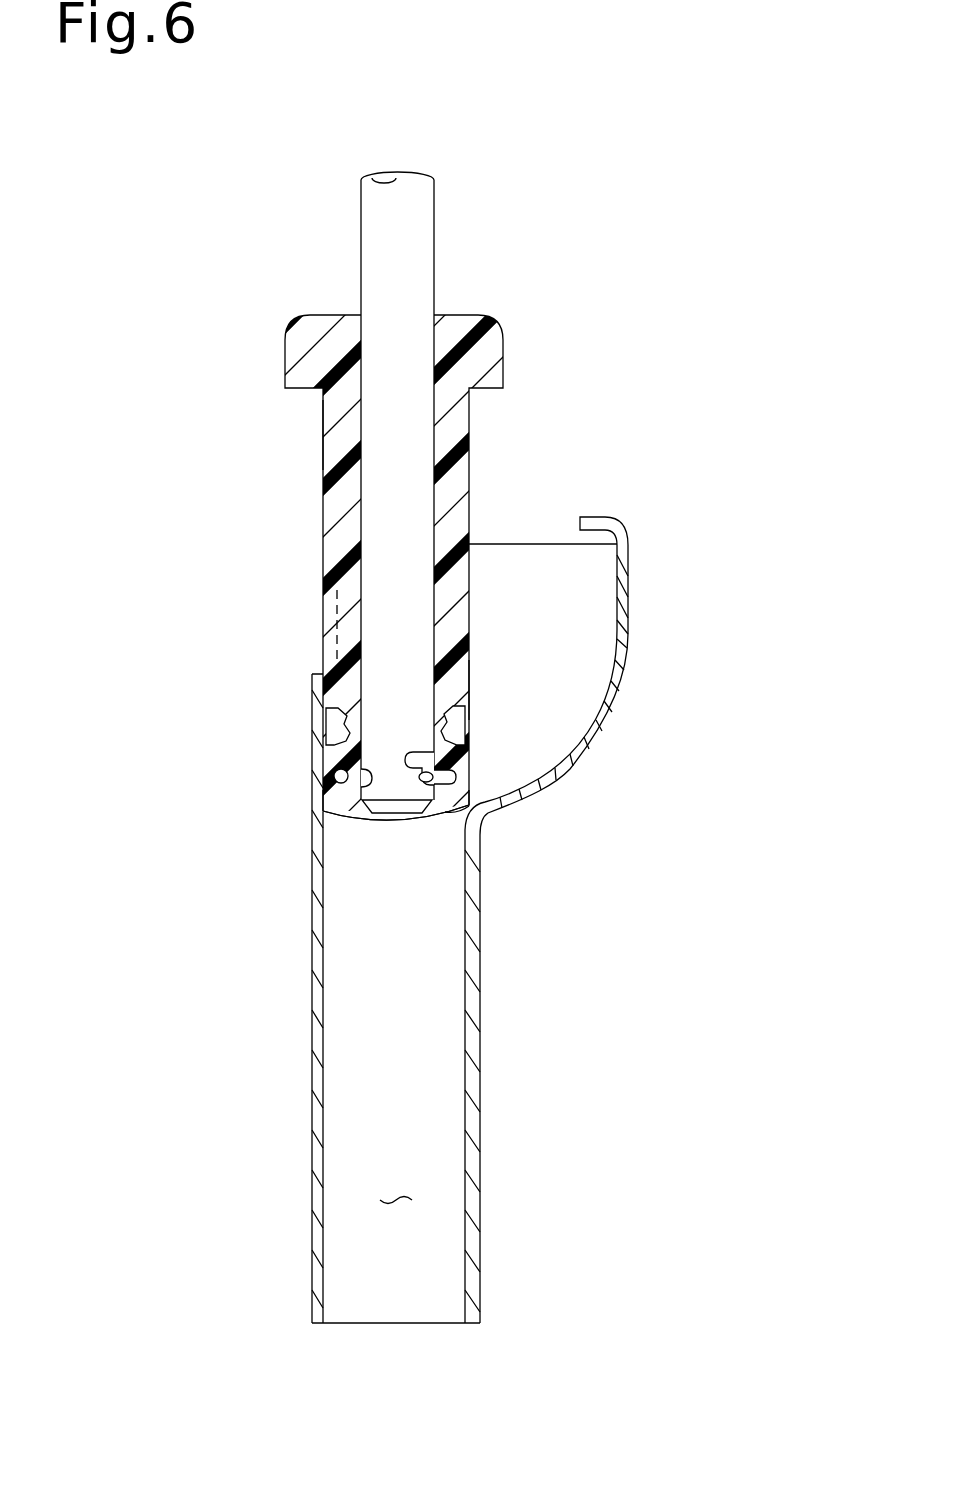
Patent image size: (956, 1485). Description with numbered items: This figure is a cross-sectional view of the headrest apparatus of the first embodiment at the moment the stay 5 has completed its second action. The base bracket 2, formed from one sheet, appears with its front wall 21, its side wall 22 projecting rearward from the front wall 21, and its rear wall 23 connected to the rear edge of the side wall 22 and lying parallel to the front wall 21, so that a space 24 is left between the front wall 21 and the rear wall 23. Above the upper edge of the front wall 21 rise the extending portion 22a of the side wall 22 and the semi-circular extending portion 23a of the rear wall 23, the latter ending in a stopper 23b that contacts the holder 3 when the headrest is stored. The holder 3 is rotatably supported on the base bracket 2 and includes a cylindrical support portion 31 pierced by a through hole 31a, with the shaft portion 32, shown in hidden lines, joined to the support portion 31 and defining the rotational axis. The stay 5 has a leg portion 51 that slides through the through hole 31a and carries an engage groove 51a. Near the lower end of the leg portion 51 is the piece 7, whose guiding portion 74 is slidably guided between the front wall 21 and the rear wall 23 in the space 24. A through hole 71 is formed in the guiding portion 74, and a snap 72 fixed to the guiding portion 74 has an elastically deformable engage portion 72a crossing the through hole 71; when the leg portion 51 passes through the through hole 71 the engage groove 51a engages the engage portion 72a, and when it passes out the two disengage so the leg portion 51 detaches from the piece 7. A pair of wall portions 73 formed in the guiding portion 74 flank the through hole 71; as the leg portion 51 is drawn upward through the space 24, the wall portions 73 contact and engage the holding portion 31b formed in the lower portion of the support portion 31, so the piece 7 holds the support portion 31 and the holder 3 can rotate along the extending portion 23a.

The base bracket 2 is at (454, 868).
The front wall 21 is at (318, 988).
The side wall 22 is at (345, 1077).
The extending portion of the side wall 22a is at (508, 556).
The rear wall 23 is at (470, 1030).
The extending portion of the rear wall 23a is at (548, 773).
The stopper 23b is at (593, 520).
The space 24 is at (402, 1181).
The holder 3 is at (451, 615).
The support portion 31 is at (330, 523).
The through hole 31a is at (358, 433).
The holding portion 31b is at (455, 697).
The shaft portion 32 is at (380, 607).
The stay 5 is at (478, 486).
The leg portion 51 is at (416, 244).
The engage groove 51a is at (440, 752).
The piece 7 is at (448, 829).
The through hole 71 is at (336, 796).
The snap 72 is at (326, 774).
The engage portion 72a is at (469, 782).
The wall portion 73 is at (340, 713).
The guiding portion 74 is at (431, 838).